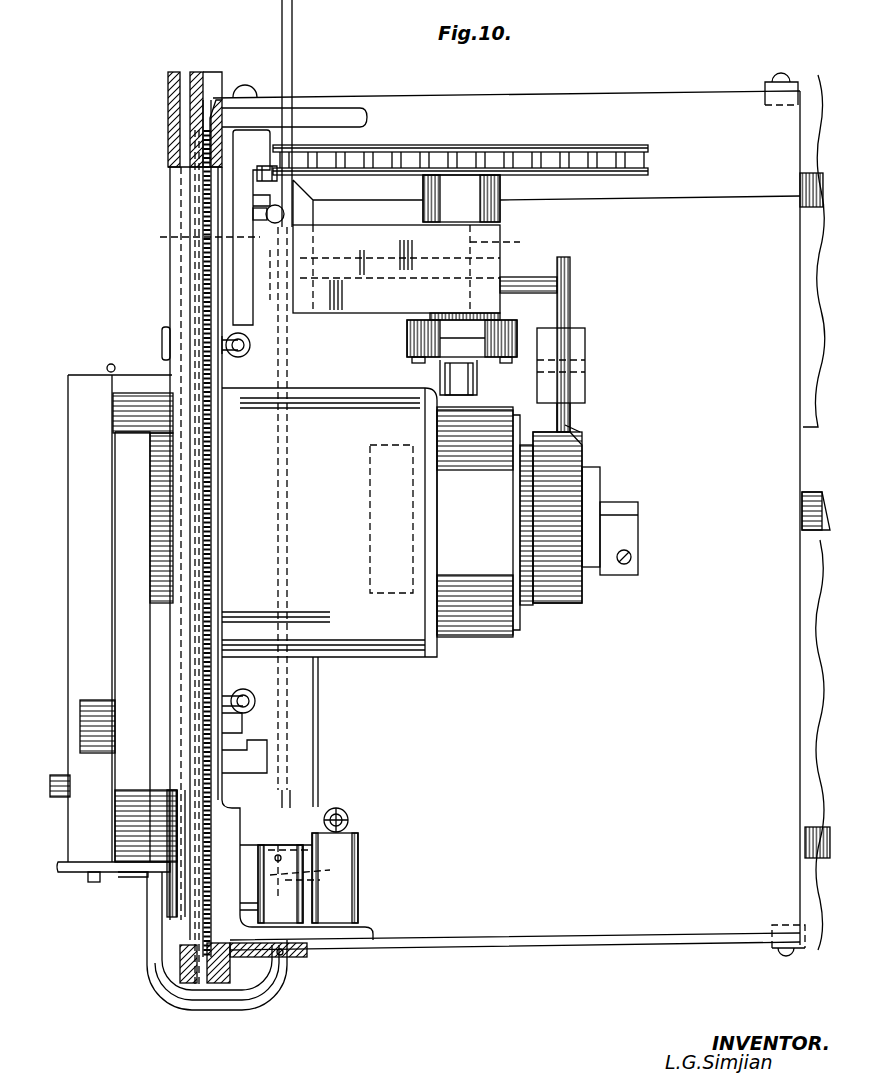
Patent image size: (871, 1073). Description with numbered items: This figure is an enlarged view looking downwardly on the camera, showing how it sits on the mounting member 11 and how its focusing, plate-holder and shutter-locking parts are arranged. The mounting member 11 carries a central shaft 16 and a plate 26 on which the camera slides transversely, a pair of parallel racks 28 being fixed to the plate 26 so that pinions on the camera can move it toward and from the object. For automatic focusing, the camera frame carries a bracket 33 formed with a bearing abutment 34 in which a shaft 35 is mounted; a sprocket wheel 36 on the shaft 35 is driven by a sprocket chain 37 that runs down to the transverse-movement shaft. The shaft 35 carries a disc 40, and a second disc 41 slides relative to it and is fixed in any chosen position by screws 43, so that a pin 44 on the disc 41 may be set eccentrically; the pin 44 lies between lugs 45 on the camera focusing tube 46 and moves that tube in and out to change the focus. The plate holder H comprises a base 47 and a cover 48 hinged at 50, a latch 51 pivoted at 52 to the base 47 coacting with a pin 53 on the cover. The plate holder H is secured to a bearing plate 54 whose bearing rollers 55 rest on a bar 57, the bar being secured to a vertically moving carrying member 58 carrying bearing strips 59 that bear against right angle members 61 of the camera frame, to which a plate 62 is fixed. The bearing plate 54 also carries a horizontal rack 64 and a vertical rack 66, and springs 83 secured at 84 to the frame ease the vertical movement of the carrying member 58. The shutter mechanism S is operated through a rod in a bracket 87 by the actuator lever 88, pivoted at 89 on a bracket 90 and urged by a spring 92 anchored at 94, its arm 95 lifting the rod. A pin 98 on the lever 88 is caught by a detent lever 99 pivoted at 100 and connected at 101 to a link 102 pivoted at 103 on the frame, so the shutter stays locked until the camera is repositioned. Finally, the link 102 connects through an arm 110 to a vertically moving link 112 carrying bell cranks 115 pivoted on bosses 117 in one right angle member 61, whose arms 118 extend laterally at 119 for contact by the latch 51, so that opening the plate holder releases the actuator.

The mounting member 11 is at (800, 946).
The shaft 16 is at (806, 492).
The plate 26 is at (803, 430).
The racks 28 is at (806, 207).
The bracket 33 is at (243, 268).
The bearing abutment 34 is at (500, 232).
The shaft 35 is at (507, 242).
The sprocket wheel 36 is at (480, 160).
The sprocket chain 37 is at (538, 148).
The disc 40 is at (407, 330).
The second disc 41 is at (407, 345).
The screws 43 is at (412, 362).
The pin 44 is at (440, 388).
The lugs 45 is at (446, 375).
The camera focusing tube 46 is at (485, 522).
The base 47 is at (130, 422).
The cover 48 is at (80, 375).
The hinge 50 is at (109, 365).
The latch 51 is at (62, 872).
The pivot 52 is at (122, 878).
The pin 53 is at (92, 883).
The bearing plate 54 is at (190, 318).
The bearing rollers 55 is at (172, 321).
The bar 57 is at (180, 960).
The carrying member 58 is at (203, 72).
The bearing strips 59 is at (227, 72).
The right angle members 61 is at (300, 112).
The plate 62 is at (215, 117).
The horizontal rack 64 is at (250, 722).
The vertical rack 66 is at (270, 742).
The springs 83 is at (243, 357).
The spring upper attachment 84 is at (255, 707).
The bracket 87 is at (634, 535).
The shutter actuator lever 88 is at (295, 15).
The pivotal mounting 89 is at (585, 362).
The bracket 90 is at (585, 340).
The spring 92 is at (255, 200).
The spring frame attachment 94 is at (265, 214).
The arm 95 is at (568, 412).
The pin 98 is at (258, 173).
The detent lever 99 is at (194, 240).
The pivot 100 is at (240, 135).
The pivot 101 is at (275, 272).
The link 102 is at (283, 378).
The pivot 103 is at (355, 870).
The arm 110 is at (290, 770).
The link 112 is at (348, 826).
The bell cranks 115 is at (355, 850).
The bosses 117 is at (305, 908).
The arms 118 is at (225, 1012).
The lateral extension 119 is at (148, 915).
The shutter mechanism S is at (583, 452).
The plate holder H is at (133, 372).